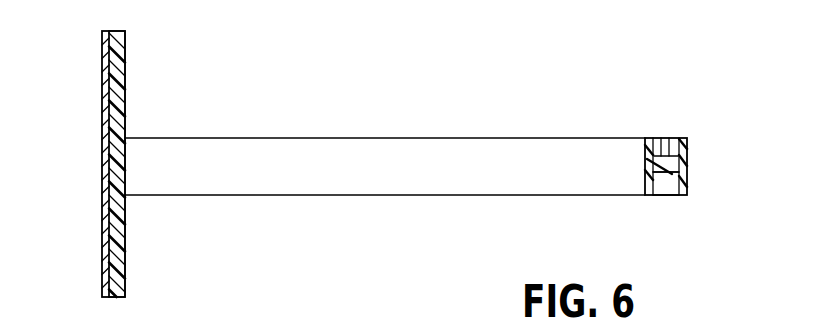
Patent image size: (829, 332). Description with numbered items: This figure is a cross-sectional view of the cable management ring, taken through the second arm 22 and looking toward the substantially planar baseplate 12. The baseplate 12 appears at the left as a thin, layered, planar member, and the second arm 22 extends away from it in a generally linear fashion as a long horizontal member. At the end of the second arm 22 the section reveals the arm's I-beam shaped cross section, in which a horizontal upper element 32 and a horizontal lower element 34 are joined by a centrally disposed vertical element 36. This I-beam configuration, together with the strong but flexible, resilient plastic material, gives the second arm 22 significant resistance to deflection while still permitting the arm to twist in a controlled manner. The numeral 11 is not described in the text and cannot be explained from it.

The mounting plate 11 is at (100, 31).
The baseplate 12 is at (118, 31).
The second arm 22 is at (453, 126).
The upper element 32 is at (687, 156).
The lower element 34 is at (645, 182).
The vertical element 36 is at (664, 150).